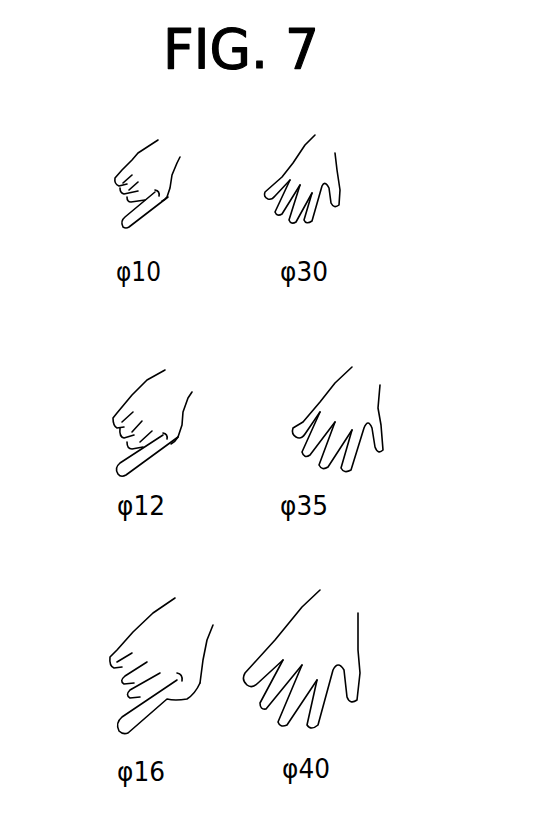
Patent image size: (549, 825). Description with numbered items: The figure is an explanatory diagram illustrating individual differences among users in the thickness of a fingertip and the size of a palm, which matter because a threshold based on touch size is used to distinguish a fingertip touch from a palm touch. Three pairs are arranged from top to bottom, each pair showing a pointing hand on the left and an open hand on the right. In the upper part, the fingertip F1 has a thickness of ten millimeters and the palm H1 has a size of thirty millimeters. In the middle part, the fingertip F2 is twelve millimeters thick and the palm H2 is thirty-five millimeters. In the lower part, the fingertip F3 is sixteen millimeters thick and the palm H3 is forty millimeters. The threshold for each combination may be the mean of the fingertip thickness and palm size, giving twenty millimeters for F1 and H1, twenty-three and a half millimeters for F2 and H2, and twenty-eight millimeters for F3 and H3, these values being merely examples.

The fingertip F1 is at (122, 211).
The palm H1 is at (340, 173).
The fingertip F2 is at (122, 458).
The palm H2 is at (381, 409).
The fingertip F3 is at (122, 717).
The palm H3 is at (362, 655).